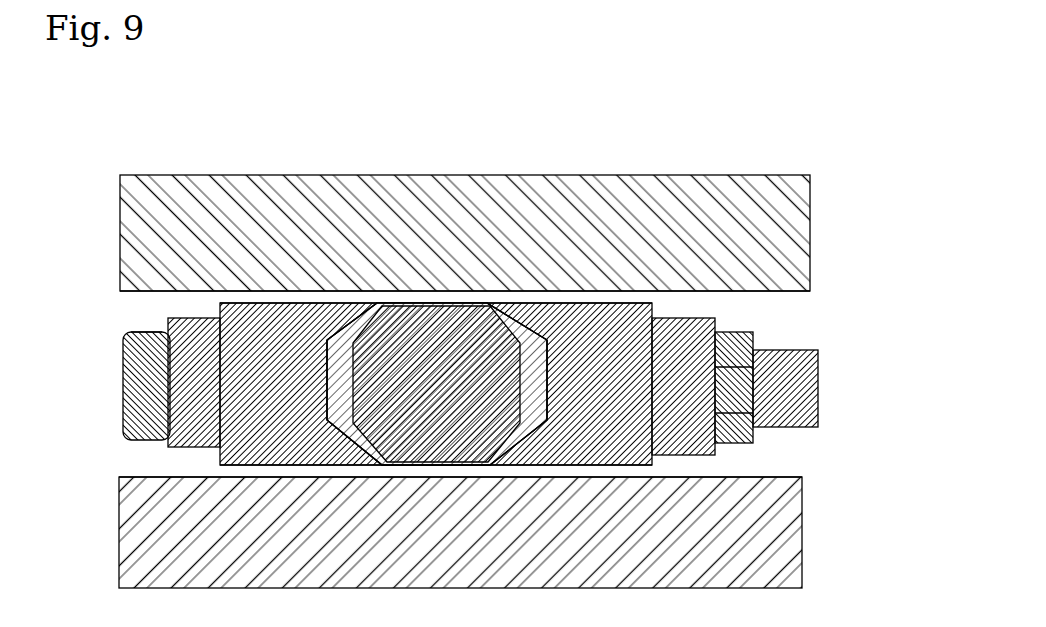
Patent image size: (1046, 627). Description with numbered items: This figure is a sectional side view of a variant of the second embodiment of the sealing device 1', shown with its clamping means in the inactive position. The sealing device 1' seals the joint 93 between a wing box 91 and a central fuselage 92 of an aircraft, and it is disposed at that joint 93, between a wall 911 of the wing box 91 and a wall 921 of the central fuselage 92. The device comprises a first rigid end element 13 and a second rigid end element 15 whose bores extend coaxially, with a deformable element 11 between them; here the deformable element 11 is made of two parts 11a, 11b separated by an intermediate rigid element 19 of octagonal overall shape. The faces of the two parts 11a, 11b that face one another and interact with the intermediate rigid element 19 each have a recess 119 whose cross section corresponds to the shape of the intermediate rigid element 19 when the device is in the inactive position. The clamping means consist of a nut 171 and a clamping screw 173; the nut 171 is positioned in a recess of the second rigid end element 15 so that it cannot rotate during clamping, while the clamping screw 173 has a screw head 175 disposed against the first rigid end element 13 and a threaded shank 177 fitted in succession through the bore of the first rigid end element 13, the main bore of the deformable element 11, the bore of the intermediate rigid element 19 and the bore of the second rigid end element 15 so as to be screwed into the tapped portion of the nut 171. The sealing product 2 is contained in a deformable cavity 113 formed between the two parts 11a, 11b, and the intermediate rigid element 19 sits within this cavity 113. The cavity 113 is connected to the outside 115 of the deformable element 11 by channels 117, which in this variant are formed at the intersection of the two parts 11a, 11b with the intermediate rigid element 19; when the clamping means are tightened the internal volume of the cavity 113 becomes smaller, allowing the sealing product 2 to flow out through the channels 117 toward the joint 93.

The sealing device 1' is at (463, 292).
The sealing product 2 is at (436, 295).
The deformable element 11 is at (422, 298).
The first part of the deformable element 11a is at (436, 205).
The second part of the deformable element 11b is at (436, 275).
The first rigid end element 13 is at (176, 275).
The second rigid end element 15 is at (698, 288).
The intermediate rigid element 19 is at (437, 281).
The deformable cavity 113 is at (467, 296).
The outside of the deformable element 115 is at (537, 294).
The channel 117 is at (437, 205).
The recess 119 is at (403, 261).
The nut 171 is at (786, 372).
The clamping screw 173 is at (87, 390).
The screw head 175 is at (112, 317).
The threaded shank 177 is at (837, 380).
The wing box 91 is at (511, 532).
The wall of the wing box 911 is at (509, 541).
The central fuselage 92 is at (515, 233).
The wall of the central fuselage 921 is at (466, 197).
The joint 93 is at (811, 437).